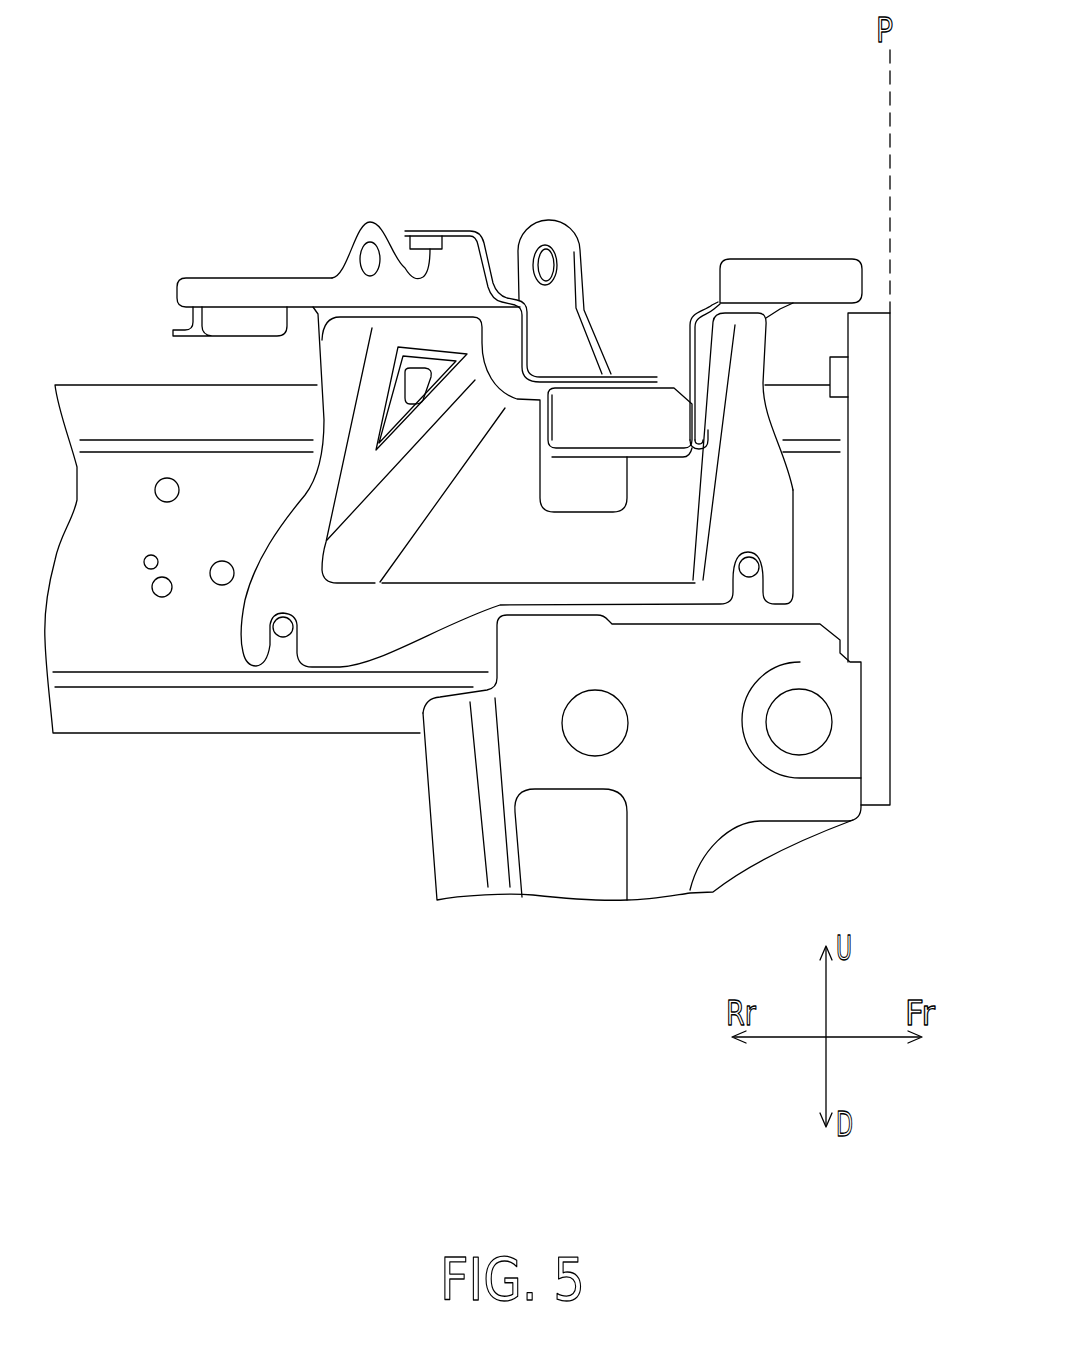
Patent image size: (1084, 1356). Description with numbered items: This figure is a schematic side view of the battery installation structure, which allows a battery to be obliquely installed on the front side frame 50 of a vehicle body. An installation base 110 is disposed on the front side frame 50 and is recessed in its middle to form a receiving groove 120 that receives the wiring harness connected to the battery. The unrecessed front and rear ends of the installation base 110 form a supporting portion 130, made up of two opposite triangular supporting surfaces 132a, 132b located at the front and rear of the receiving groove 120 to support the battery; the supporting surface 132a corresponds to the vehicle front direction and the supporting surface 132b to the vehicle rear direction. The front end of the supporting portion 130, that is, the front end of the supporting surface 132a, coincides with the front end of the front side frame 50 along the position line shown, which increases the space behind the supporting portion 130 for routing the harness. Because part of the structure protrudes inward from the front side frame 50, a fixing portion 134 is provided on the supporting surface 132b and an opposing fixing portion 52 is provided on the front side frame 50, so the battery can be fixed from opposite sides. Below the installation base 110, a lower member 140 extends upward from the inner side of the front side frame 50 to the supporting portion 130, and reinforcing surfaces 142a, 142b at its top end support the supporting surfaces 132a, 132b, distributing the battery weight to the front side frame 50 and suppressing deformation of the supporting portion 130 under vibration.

The front side frame 50 is at (130, 403).
The fixing portion 52 is at (546, 230).
The installation base 110 is at (500, 353).
The receiving groove 120 is at (630, 374).
The supporting portion 130 is at (793, 181).
The supporting surface 132a is at (708, 299).
The supporting surface 132b is at (253, 276).
The fixing portion 134 is at (368, 220).
The lower member 140 is at (650, 558).
The reinforcing surface 142a is at (755, 317).
The reinforcing surface 142b is at (425, 323).